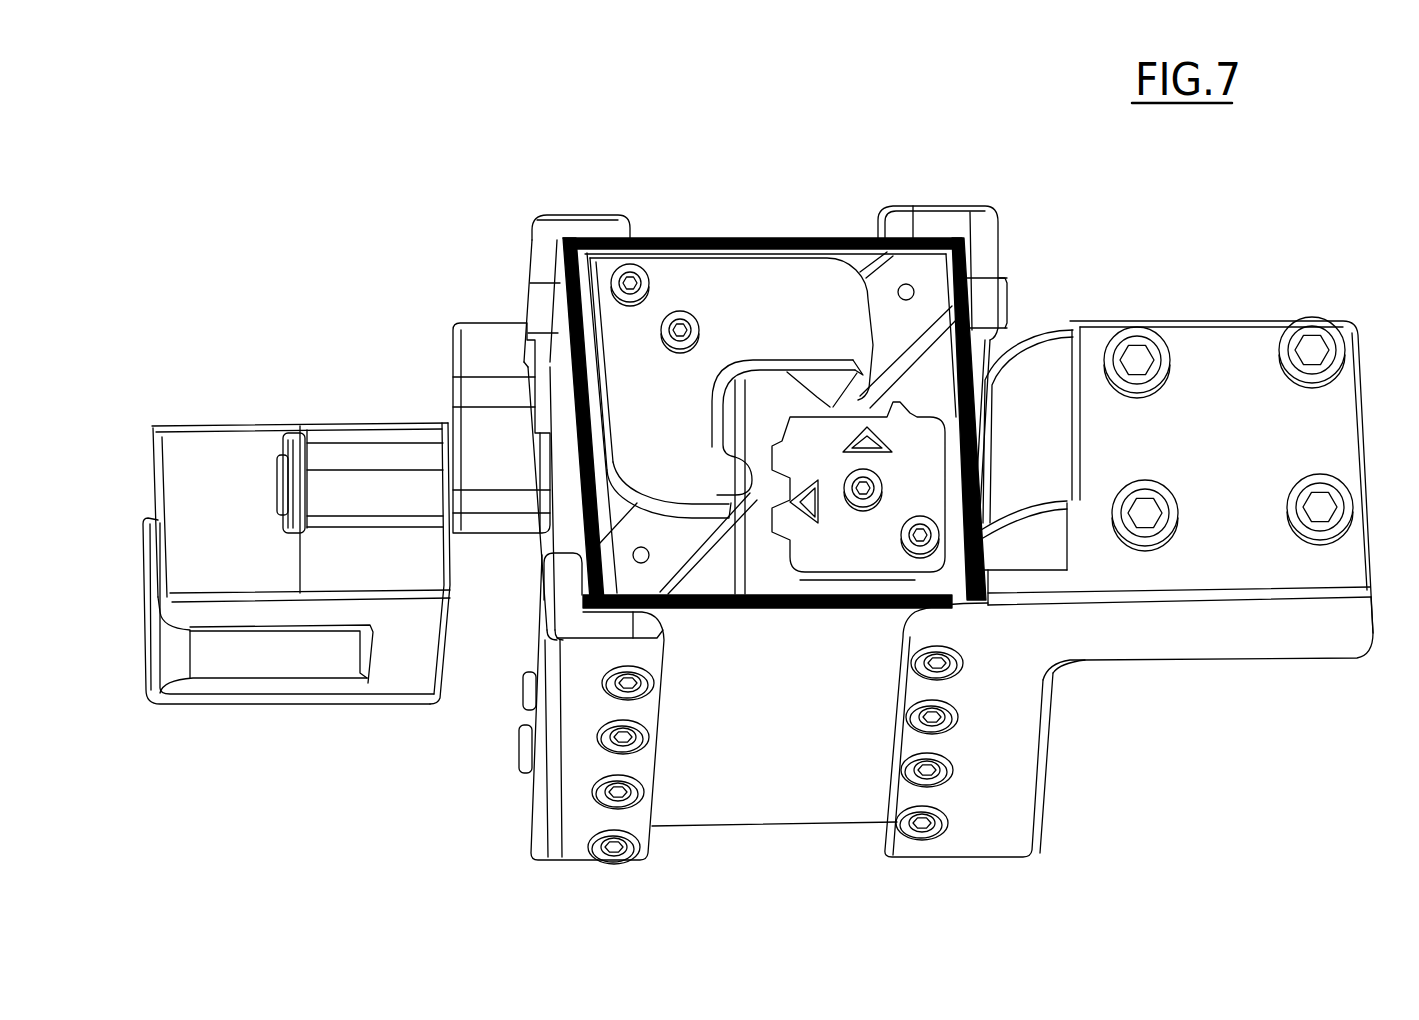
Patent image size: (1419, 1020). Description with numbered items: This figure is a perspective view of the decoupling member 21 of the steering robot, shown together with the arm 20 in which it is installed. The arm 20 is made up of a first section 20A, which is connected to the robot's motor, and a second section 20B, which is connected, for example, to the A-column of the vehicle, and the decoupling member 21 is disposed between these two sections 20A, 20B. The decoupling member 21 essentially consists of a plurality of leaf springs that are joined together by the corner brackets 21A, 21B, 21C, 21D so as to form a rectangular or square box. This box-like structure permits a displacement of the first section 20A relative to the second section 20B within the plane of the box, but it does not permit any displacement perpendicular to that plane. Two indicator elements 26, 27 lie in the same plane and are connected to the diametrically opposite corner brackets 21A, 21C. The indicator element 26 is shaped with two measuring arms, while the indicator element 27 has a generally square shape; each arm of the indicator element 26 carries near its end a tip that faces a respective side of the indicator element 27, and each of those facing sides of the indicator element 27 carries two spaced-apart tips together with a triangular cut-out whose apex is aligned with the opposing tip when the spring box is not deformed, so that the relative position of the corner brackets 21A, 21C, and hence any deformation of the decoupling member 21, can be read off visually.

The arm 20 is at (1219, 296).
The first section 20A is at (1237, 637).
The second section 20B is at (300, 688).
The decoupling member 21 is at (778, 214).
The corner bracket 21A is at (547, 240).
The corner bracket 21B is at (978, 246).
The corner bracket 21C is at (1003, 838).
The corner bracket 21D is at (555, 835).
The indicator element 26 is at (787, 320).
The indicator element 27 is at (873, 556).